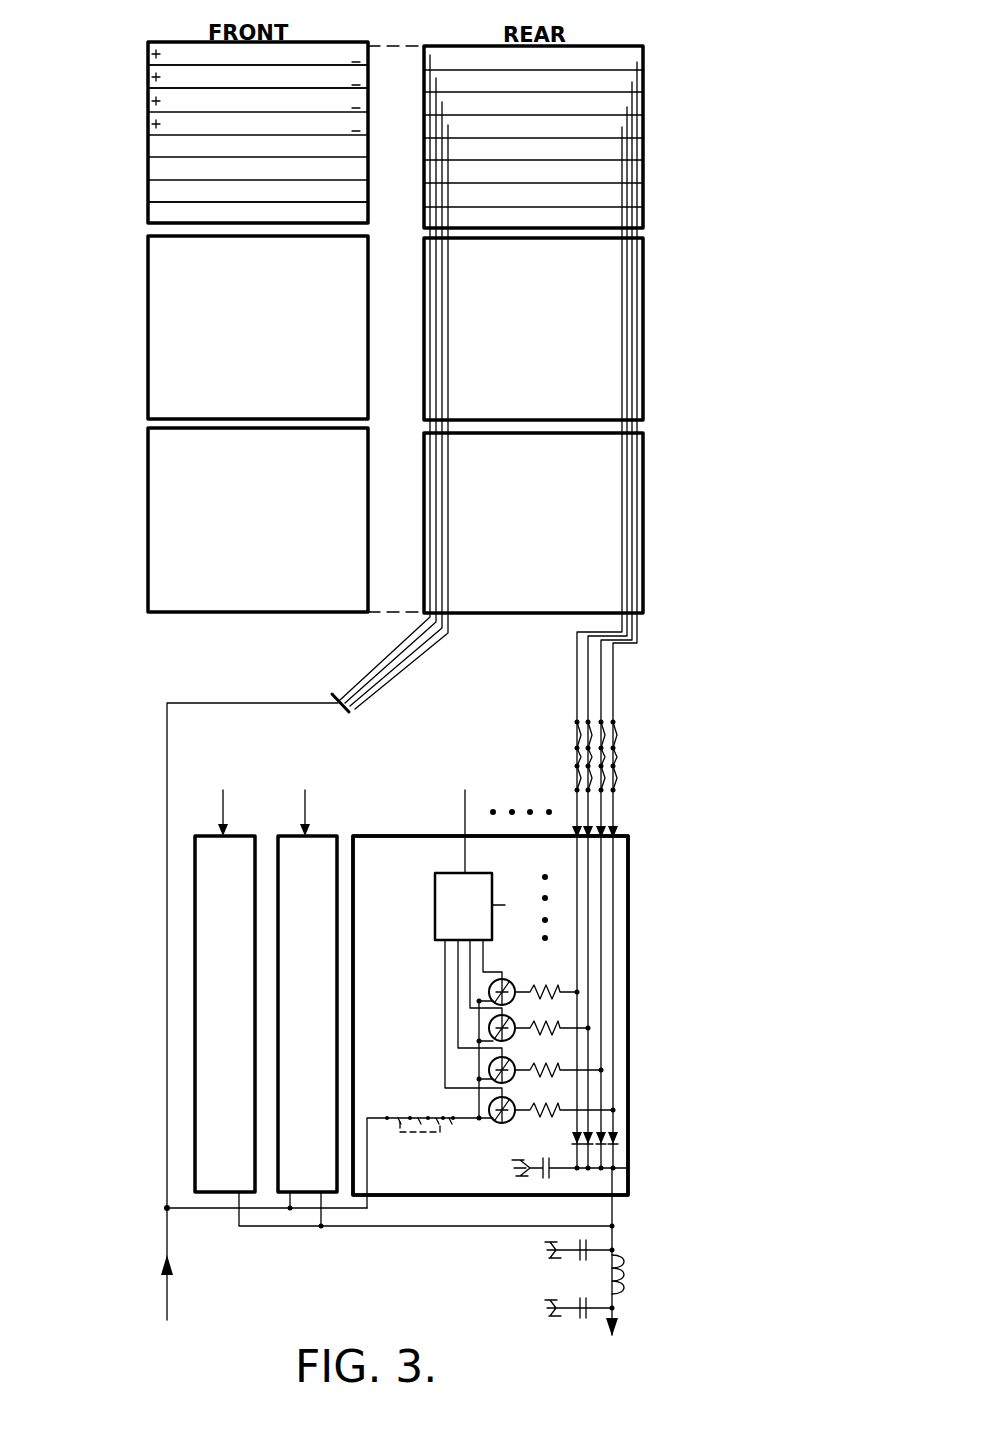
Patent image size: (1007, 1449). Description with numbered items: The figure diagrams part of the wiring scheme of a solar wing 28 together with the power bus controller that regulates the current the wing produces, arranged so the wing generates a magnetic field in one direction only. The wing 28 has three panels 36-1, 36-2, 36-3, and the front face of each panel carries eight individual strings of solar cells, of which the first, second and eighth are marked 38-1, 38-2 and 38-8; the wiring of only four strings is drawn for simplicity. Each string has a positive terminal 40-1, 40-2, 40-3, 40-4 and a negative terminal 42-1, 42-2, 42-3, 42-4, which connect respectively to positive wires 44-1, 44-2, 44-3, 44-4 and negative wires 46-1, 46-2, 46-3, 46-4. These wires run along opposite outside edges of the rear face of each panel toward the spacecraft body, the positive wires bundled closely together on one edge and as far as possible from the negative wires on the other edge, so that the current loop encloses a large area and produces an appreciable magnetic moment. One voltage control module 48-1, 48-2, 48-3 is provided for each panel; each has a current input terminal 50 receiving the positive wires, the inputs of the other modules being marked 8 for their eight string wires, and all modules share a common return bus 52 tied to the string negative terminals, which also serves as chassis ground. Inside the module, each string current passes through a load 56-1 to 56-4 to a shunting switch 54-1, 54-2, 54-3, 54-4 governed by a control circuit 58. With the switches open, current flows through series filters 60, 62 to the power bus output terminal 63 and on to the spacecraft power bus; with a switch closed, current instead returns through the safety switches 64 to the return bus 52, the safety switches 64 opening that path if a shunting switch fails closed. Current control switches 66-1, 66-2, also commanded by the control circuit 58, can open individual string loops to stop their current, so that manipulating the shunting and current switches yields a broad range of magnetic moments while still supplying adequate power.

The solar wing 28 is at (742, 75).
The solar cell string 38-1 is at (148, 55).
The solar cell string 38-2 is at (148, 80).
The solar cell string 38-8 is at (148, 212).
The positive terminal 40-1 is at (160, 52).
The positive terminal 40-2 is at (160, 75).
The positive terminal 40-3 is at (160, 99).
The positive terminal 40-4 is at (160, 122).
The negative terminal 42-1 is at (352, 60).
The negative terminal 42-2 is at (352, 83).
The negative terminal 42-3 is at (352, 106).
The negative terminal 42-4 is at (352, 129).
The panel 36-1 is at (643, 145).
The panel 36-2 is at (643, 383).
The panel 36-3 is at (643, 515).
The positive wire 44-1 is at (637, 256).
The positive wire 44-2 is at (632, 293).
The positive wire 44-3 is at (627, 275).
The positive wire 44-4 is at (622, 326).
The negative wire 46-1 is at (430, 370).
The negative wire 46-2 is at (436, 452).
The negative wire 46-3 is at (442, 498).
The negative wire 46-4 is at (448, 572).
The common return bus 52 is at (167, 742).
The voltage control module 48-1 is at (422, 836).
The voltage control module 48-2 is at (278, 848).
The voltage control module 48-3 is at (195, 885).
The input signal lines 8 is at (310, 798).
The control circuit 58 is at (435, 892).
The current control switch 66-1 is at (617, 776).
The current control switch 66-2 is at (600, 790).
The current input terminal 50 is at (626, 810).
The shunting switch 54-1 is at (490, 992).
The shunting switch 54-2 is at (490, 1028).
The shunting switch 54-3 is at (490, 1070).
The shunting switch 54-4 is at (490, 1110).
The load 56-1 is at (556, 962).
The load 56-4 is at (548, 1125).
The safety switches 64 is at (418, 1130).
The filter 60 is at (626, 1172).
The filter 62 is at (626, 1285).
The power bus output terminal 63 is at (614, 1318).